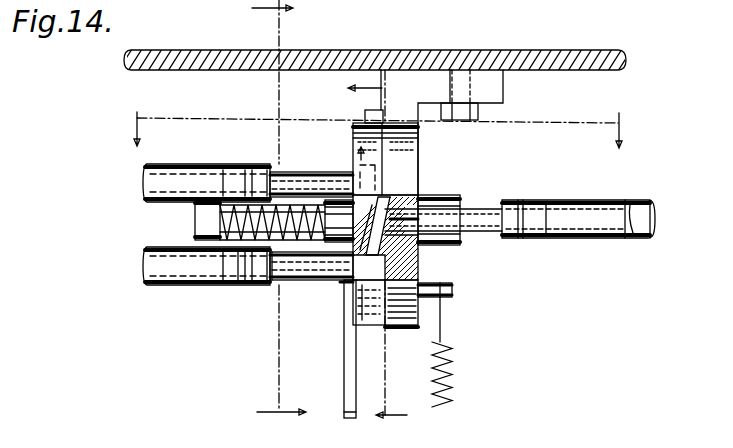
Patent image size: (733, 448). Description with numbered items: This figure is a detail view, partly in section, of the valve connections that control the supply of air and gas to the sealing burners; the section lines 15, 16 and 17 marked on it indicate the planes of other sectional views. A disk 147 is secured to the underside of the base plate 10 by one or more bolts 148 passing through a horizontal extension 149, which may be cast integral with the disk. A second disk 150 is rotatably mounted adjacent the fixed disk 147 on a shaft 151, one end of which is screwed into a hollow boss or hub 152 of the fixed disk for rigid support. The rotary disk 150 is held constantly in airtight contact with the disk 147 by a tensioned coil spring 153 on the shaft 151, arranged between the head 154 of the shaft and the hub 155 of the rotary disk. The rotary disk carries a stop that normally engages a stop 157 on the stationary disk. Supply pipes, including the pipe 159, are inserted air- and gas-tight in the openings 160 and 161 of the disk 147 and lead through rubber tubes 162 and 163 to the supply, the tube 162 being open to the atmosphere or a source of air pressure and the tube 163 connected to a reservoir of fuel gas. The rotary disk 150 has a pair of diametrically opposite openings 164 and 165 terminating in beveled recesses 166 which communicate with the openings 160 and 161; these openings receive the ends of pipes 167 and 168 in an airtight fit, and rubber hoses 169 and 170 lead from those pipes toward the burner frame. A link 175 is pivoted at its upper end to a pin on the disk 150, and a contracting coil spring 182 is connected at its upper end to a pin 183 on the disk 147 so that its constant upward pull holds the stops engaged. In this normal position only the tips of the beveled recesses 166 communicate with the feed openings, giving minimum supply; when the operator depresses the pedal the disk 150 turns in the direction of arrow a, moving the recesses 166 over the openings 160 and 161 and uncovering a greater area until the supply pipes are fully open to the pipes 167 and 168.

The base plate 10 is at (572, 63).
The section line 15 is at (373, 141).
The section line 16 is at (287, 219).
The section line 17 is at (366, 254).
The disk 147 is at (420, 266).
The bolts 148 is at (478, 114).
The horizontal extension 149 is at (492, 88).
The second disk 150 is at (350, 308).
The shaft 151 is at (238, 254).
The hollow boss or hub 152 is at (448, 197).
The tensioned coil spring 153 is at (301, 284).
The head 154 is at (200, 222).
The hub 155 is at (347, 196).
The stop 157 is at (368, 112).
The pipe 159 is at (482, 207).
The opening 160 is at (385, 432).
The opening 161 is at (393, 208).
The tube 162 is at (641, 213).
The tube 163 is at (590, 230).
The opening 164 is at (390, 142).
The opening 165 is at (377, 287).
The beveled recesses 166 is at (346, 283).
The pipe 167 is at (296, 176).
The pipe 168 is at (276, 283).
The rubber hose 169 is at (150, 180).
The rubber hose 170 is at (152, 266).
The link 175 is at (345, 381).
The contracting coil spring 182 is at (450, 366).
The pin 183 is at (453, 290).
The arrow a is at (356, 158).